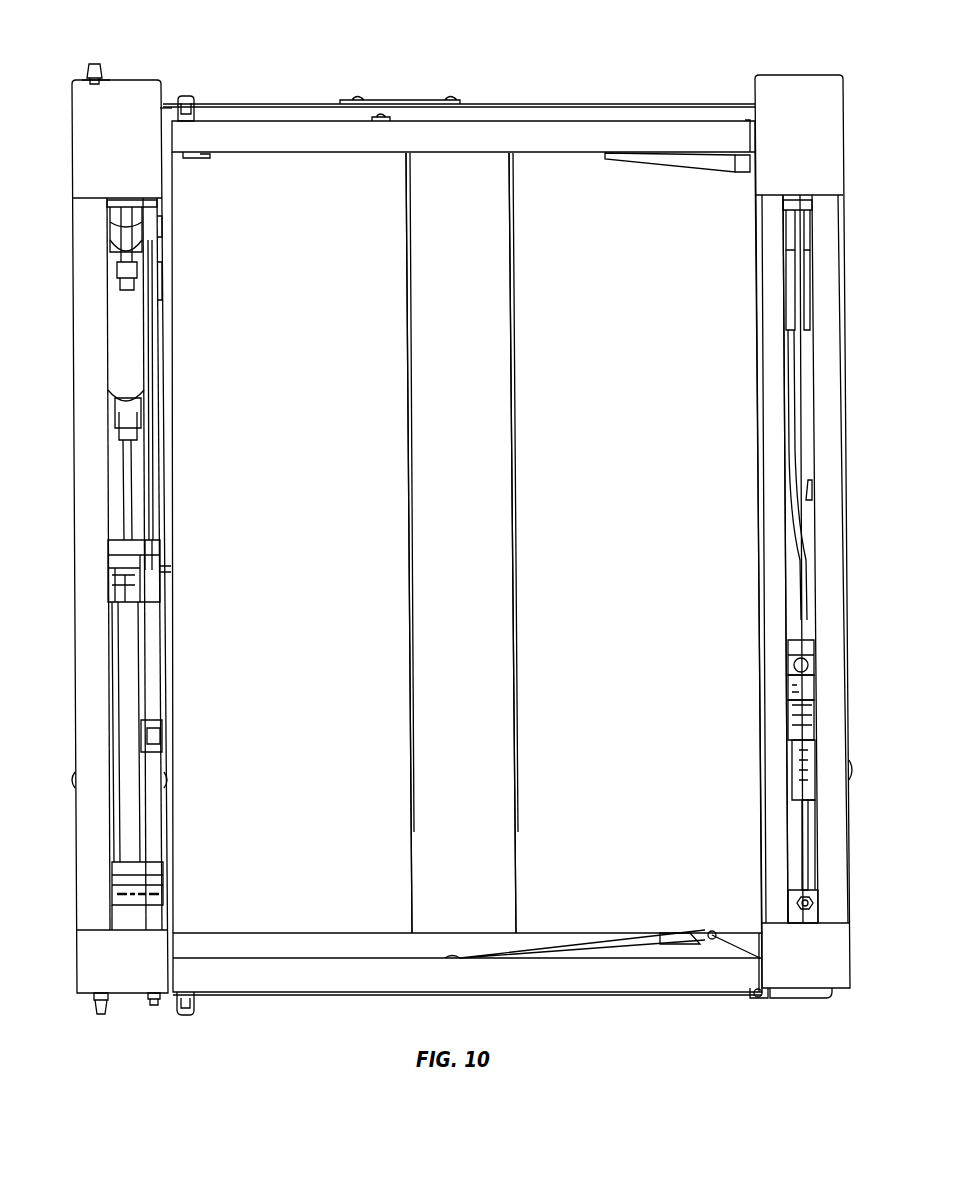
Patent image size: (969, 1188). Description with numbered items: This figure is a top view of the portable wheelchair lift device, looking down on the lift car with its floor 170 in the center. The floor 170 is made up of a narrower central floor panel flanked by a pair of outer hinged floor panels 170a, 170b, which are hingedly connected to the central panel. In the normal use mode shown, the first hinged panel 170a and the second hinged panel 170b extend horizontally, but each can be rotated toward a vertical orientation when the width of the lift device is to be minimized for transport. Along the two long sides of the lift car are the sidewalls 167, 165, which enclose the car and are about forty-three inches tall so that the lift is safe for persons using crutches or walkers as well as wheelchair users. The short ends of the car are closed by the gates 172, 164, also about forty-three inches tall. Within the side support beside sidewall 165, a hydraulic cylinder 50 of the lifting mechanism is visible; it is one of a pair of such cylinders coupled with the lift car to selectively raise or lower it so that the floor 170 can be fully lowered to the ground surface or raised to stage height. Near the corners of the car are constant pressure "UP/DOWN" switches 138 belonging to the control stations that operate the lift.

The "UP/DOWN" switch 138 is at (96, 60).
The gate 172 is at (568, 130).
The sidewall 167 is at (90, 489).
The sidewall 165 is at (835, 465).
The hydraulic cylinder 50 is at (798, 610).
The lift car floor 170 is at (466, 764).
The first hinged panel 170a is at (286, 769).
The second hinged panel 170b is at (641, 774).
The gate 164 is at (545, 994).